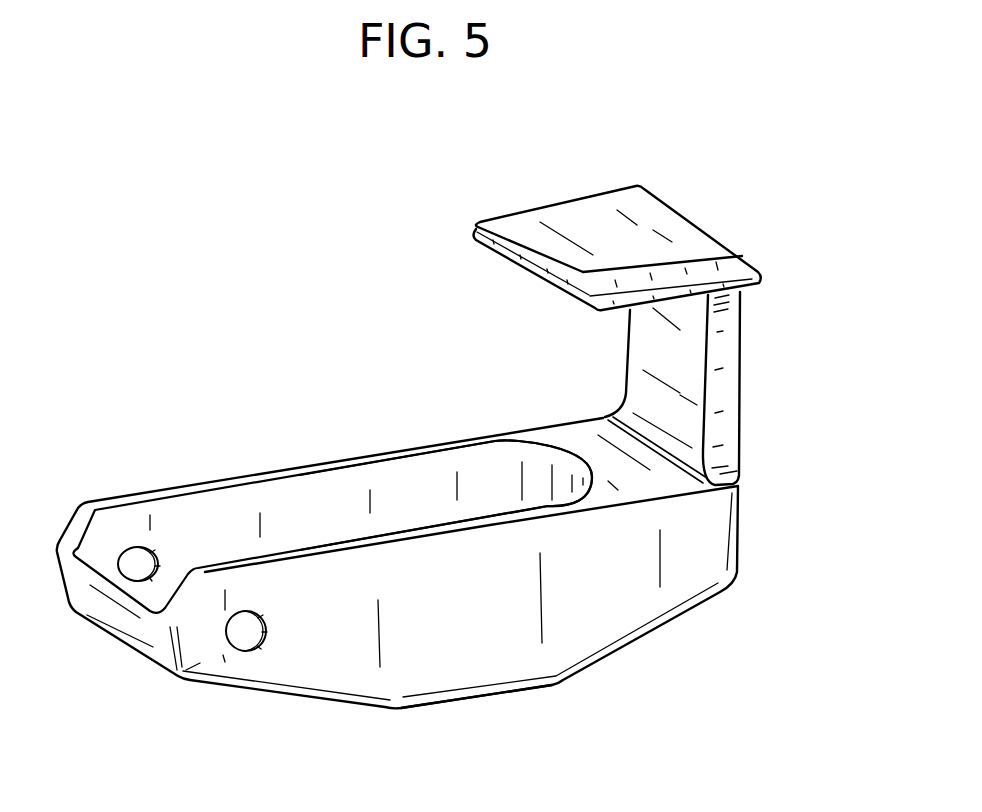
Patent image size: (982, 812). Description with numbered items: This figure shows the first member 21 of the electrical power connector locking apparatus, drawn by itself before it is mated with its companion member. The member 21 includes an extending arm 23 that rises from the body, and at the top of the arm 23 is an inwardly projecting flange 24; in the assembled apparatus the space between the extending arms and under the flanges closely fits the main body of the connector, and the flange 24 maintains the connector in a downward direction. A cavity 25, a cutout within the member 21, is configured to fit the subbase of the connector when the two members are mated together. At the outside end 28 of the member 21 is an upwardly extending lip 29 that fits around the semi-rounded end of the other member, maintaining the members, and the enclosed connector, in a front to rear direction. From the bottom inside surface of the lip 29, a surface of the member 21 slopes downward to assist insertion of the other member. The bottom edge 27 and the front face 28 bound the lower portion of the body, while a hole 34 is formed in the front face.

The member 21 is at (760, 385).
The extending arm 23 is at (740, 343).
The inwardly projecting flange 24 is at (677, 237).
The cavity 25 is at (240, 512).
The bottom edge 27 is at (520, 690).
The outside end 28 is at (198, 662).
The lip 29 is at (102, 607).
The hole in front face 34 is at (258, 648).